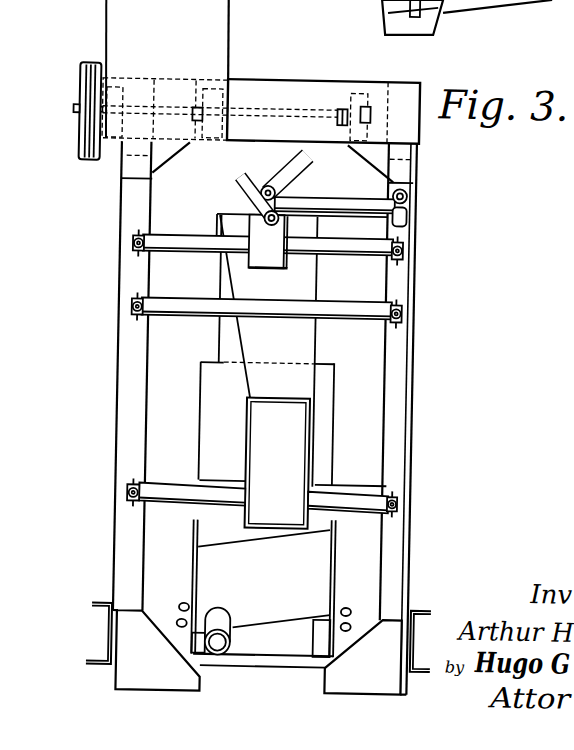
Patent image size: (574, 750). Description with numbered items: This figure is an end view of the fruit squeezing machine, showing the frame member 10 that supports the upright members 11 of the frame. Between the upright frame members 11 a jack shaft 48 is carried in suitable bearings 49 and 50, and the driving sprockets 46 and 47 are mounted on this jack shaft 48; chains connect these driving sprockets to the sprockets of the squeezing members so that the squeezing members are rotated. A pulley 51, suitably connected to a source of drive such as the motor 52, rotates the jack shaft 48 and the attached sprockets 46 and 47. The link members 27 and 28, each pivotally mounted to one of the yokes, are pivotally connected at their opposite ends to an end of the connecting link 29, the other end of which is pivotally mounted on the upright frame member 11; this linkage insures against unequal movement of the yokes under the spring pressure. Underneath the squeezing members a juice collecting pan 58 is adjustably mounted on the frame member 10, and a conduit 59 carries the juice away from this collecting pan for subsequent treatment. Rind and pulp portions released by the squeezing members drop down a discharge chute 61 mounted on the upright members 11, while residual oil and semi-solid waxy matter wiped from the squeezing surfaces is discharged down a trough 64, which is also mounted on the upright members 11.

The frame member 10 is at (424, 608).
The upright members 11 is at (116, 215).
The link member 27 is at (228, 181).
The link member 28 is at (310, 164).
The connecting link 29 is at (359, 199).
The driving sprocket 46 is at (334, 104).
The driving sprocket 47 is at (193, 91).
The jack shaft 48 is at (286, 112).
The bearing 49 is at (227, 76).
The bearing 50 is at (361, 88).
The pulley 51 is at (74, 77).
The motor 52 is at (106, 23).
The juice collecting pan 58 is at (333, 555).
The conduit 59 is at (231, 621).
The discharge chute 61 is at (312, 347).
The trough 64 is at (255, 265).